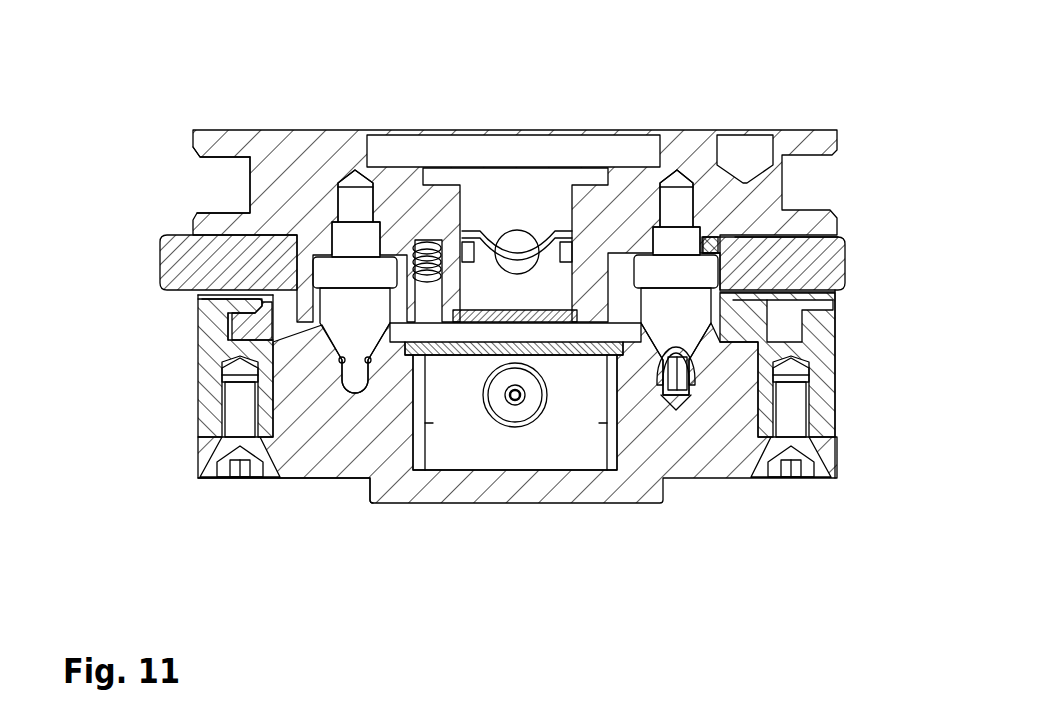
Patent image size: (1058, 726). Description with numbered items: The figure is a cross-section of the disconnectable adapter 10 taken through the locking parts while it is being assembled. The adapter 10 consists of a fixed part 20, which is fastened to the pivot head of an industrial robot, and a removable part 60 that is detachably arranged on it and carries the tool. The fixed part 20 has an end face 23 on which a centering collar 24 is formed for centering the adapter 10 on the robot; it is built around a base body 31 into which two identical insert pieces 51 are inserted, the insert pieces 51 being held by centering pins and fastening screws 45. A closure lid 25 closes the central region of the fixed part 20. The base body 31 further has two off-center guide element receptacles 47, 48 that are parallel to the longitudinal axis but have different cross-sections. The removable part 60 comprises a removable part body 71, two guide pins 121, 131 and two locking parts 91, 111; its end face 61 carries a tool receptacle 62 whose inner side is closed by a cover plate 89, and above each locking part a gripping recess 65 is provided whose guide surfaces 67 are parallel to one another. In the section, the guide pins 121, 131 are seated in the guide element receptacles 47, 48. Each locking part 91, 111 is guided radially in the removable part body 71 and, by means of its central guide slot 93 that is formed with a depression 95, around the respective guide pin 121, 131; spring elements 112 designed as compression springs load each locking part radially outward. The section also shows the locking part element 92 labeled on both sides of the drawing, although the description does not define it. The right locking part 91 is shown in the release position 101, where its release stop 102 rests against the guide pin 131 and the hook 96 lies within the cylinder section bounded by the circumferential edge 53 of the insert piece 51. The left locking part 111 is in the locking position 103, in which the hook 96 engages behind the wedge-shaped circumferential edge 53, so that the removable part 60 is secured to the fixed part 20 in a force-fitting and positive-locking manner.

The disconnectable adapter 10 is at (457, 513).
The fixed part 20 is at (678, 482).
The end face 23 is at (293, 475).
The centering collar 24 is at (372, 485).
The closure lid 25 is at (453, 348).
The base body 31 is at (607, 482).
The fastening screws 45 is at (760, 470).
The guide element receptacle 47 is at (362, 393).
The guide element receptacle 48 is at (660, 398).
The insert piece 51 is at (215, 367).
The circumferential edge 53 is at (245, 328).
The removable part 60 is at (710, 120).
The end face 61 is at (679, 131).
The tool receptacle 62 is at (517, 208).
The gripping recess 65 is at (212, 173).
The guide surfaces 67 is at (248, 198).
The removable part body 71 is at (338, 155).
The cover plate 89 is at (492, 316).
The locking part 91 is at (718, 253).
The ring 92 is at (159, 262).
The guide slot 93 is at (720, 287).
The depression 95 is at (793, 255).
The hook 96 is at (248, 303).
The release position 101 is at (785, 328).
The release stop 102 is at (702, 242).
The locking position 103 is at (255, 300).
The locking part 111 is at (193, 247).
The spring elements 112 is at (427, 250).
The guide pin 121 is at (355, 272).
The guide pin 131 is at (667, 277).